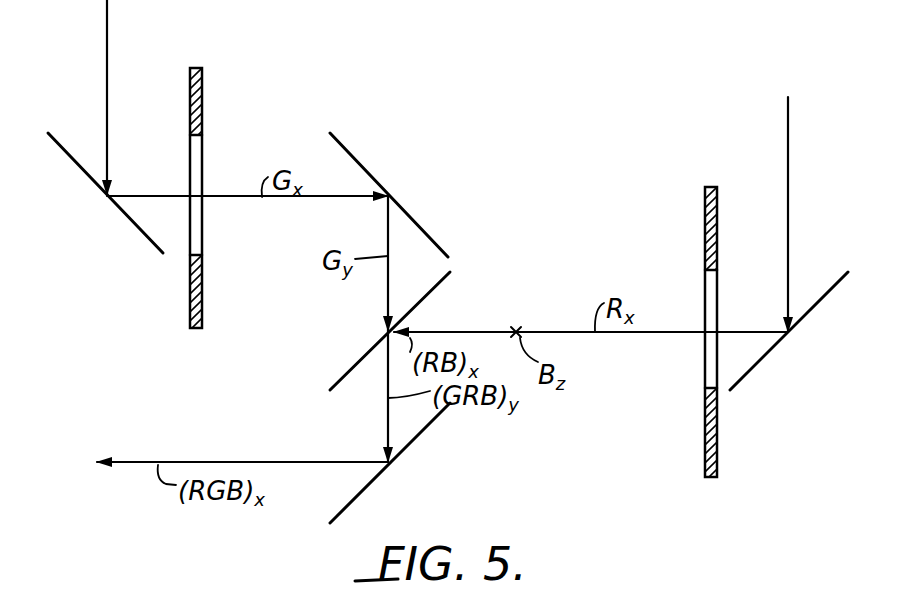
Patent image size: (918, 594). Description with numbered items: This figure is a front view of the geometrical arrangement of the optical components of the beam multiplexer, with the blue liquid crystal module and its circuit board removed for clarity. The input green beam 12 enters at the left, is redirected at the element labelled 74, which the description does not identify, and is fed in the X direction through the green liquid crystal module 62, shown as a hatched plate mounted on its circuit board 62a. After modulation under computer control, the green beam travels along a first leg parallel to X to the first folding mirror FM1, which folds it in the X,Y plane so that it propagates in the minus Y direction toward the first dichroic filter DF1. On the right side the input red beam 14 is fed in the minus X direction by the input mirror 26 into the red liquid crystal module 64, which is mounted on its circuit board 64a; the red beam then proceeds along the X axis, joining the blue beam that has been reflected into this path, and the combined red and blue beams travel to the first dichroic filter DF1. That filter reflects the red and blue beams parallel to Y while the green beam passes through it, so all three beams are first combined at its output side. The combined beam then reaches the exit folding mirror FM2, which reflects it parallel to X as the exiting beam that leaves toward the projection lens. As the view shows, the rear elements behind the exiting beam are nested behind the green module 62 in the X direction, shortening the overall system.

The input green beam 12 is at (107, 45).
The input red beam 14 is at (788, 197).
The mirror 74 is at (78, 168).
The green liquid crystal module 62 is at (202, 150).
The circuit board 62a is at (202, 97).
The red liquid crystal module 64 is at (705, 384).
The circuit board 64a is at (705, 206).
The input mirror 26 is at (740, 391).
The first folding mirror FM1 is at (368, 170).
The exit folding mirror FM2 is at (416, 430).
The first dichroic filter DF1 is at (362, 355).